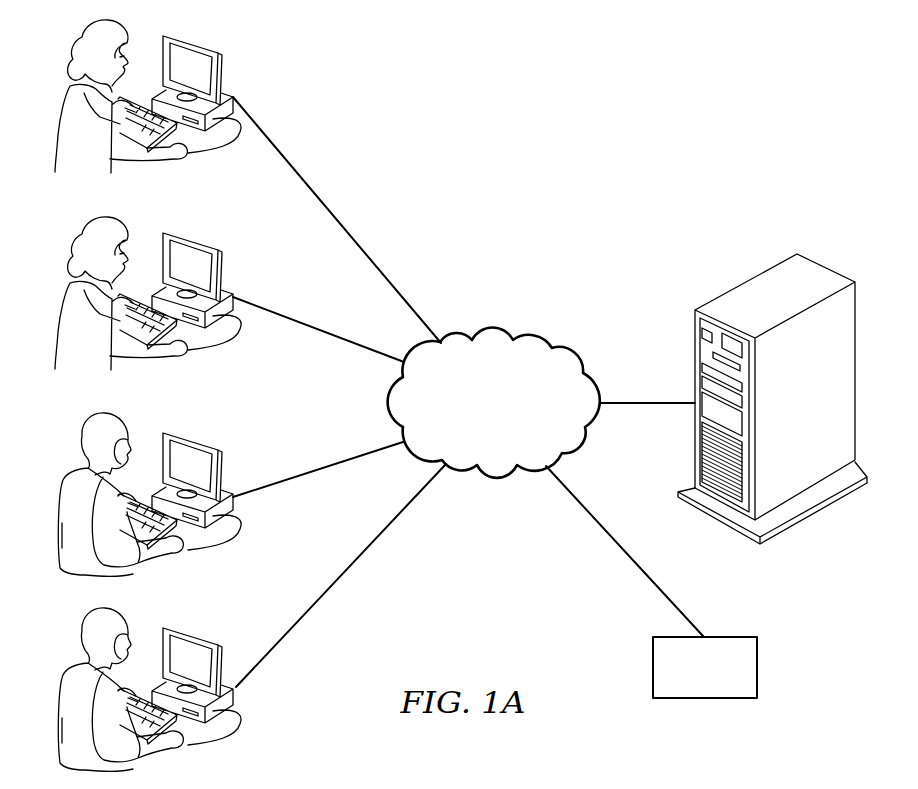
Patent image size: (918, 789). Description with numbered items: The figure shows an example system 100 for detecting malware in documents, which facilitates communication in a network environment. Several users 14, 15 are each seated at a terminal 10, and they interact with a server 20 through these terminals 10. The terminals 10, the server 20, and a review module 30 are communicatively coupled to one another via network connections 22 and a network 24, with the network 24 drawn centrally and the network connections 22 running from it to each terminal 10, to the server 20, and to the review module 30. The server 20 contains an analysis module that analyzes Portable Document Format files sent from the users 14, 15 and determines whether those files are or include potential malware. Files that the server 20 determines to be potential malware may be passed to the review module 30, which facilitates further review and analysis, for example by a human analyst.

The terminal 10 is at (222, 72).
The user 14 is at (70, 101).
The user 15 is at (80, 558).
The server 20 is at (751, 281).
The network connection 22 is at (340, 223).
The network 24 is at (494, 327).
The review module 30 is at (757, 665).
The system 100 is at (577, 197).